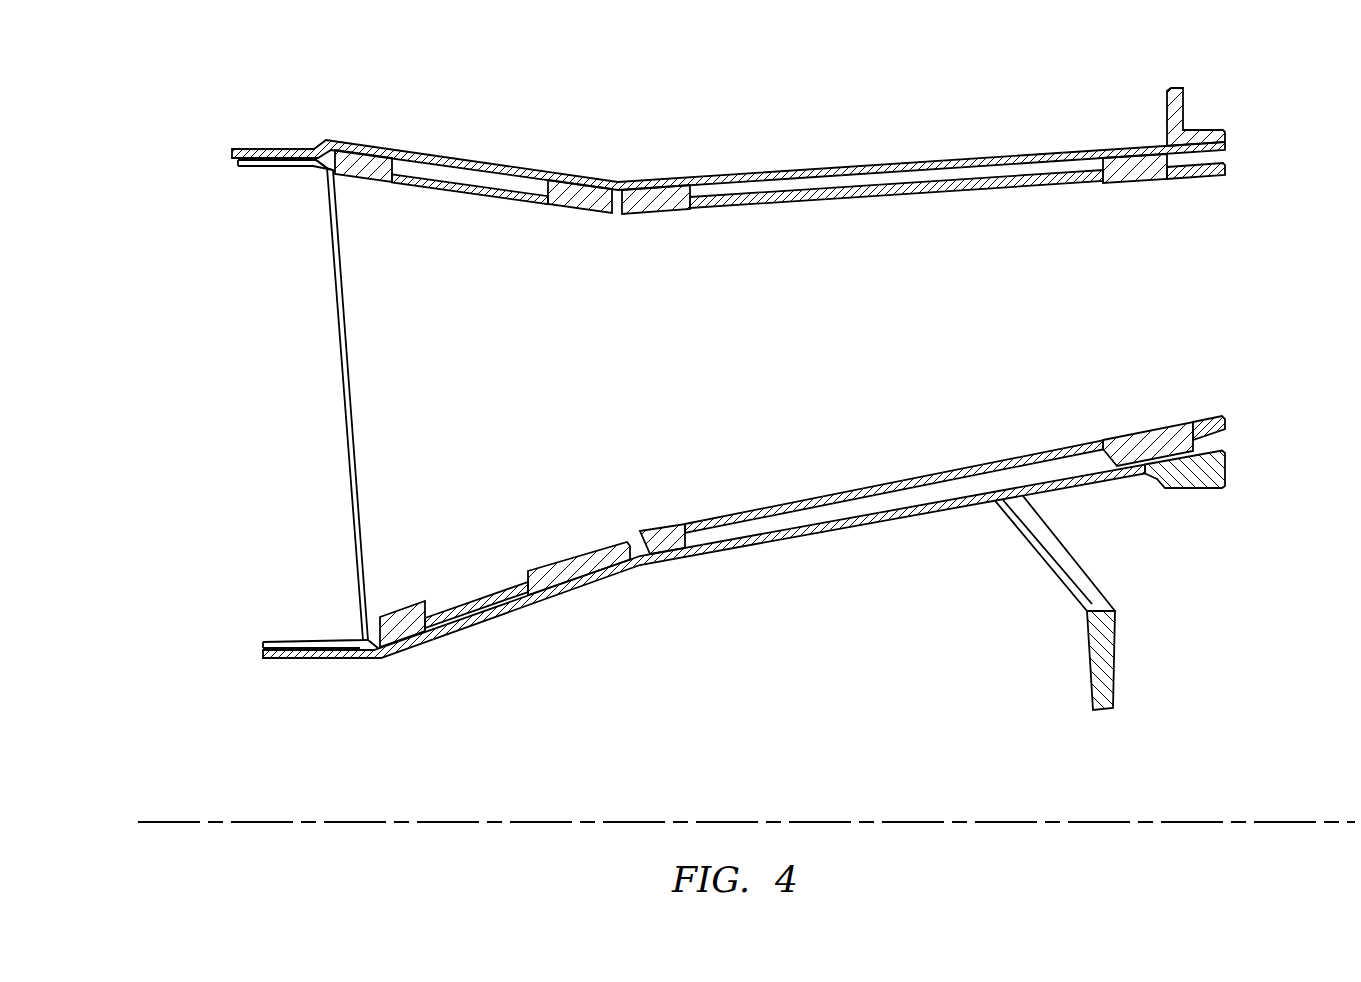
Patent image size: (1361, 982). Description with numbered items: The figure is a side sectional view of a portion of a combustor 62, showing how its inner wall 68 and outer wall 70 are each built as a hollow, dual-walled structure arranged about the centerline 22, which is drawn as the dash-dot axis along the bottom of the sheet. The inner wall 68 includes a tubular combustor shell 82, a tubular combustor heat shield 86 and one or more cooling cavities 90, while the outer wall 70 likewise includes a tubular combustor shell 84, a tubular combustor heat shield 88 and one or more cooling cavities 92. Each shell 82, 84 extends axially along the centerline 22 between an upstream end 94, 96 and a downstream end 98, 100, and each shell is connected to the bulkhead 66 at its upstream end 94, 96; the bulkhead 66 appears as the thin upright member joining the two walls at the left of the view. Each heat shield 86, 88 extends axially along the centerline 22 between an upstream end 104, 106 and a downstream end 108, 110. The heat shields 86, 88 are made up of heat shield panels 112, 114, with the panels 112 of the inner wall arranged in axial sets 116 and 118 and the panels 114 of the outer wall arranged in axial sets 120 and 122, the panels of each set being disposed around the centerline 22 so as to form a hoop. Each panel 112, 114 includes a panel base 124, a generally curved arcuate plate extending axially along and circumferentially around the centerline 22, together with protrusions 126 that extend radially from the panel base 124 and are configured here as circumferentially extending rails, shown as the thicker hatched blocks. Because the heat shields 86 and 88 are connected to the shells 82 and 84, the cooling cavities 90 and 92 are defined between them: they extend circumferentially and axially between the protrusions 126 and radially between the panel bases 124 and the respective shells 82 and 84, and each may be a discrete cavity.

The centerline 22 is at (1203, 820).
The exhaust nozzle assembly 62 is at (286, 96).
The bulkhead 66 is at (338, 378).
The inner wall 68 is at (680, 568).
The outer wall 70 is at (743, 162).
The tubular combustor shell 82 is at (540, 600).
The tubular combustor shell 84 is at (585, 176).
The tubular combustor heat shield 86 is at (600, 540).
The tubular combustor heat shield 88 is at (713, 216).
The inner wall cooling cavity 90 is at (470, 618).
The cooling cavity 92 is at (468, 158).
The upstream end 94 is at (263, 655).
The upstream end 96 is at (232, 153).
The downstream end 98 is at (1226, 482).
The downstream end 100 is at (1222, 128).
The upstream end 104 is at (370, 630).
The upstream end 106 is at (320, 172).
The downstream end 108 is at (1225, 420).
The downstream end 110 is at (1225, 170).
The heat shield panel 112 is at (853, 488).
The heat shield panel 114 is at (523, 200).
The axial set 116 is at (435, 590).
The axial set 118 is at (947, 462).
The axial set 120 is at (461, 203).
The axial set 122 is at (826, 212).
The panel base 124 is at (415, 180).
The protrusion 126 is at (370, 150).